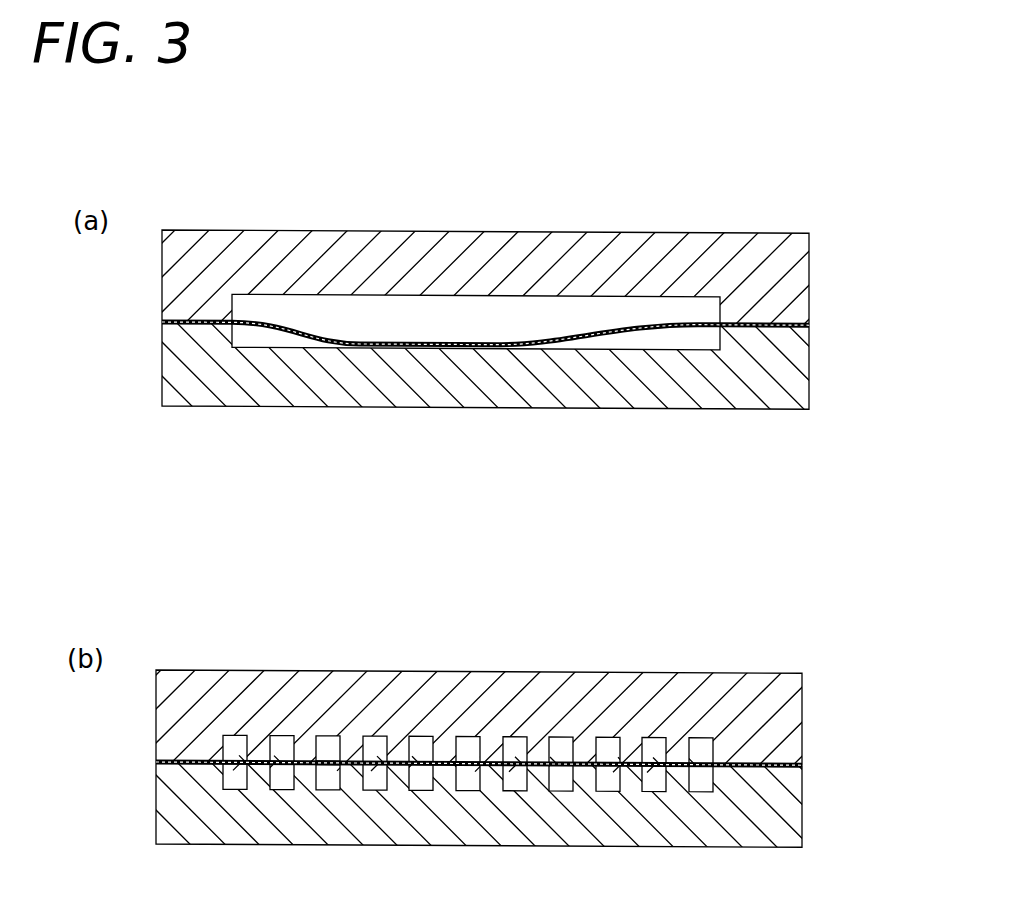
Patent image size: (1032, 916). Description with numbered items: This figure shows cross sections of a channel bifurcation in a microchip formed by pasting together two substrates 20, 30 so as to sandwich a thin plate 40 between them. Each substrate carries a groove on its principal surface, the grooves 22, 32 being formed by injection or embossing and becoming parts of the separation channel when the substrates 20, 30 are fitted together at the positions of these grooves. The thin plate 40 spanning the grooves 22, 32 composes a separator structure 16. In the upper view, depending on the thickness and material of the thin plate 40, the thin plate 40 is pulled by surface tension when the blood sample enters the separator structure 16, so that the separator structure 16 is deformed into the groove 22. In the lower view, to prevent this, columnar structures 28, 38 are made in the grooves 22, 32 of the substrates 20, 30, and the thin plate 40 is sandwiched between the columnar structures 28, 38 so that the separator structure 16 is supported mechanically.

The separator structure 16 is at (383, 328).
The substrate 20 is at (489, 615).
The groove 22 is at (290, 337).
The columnar structure 28 is at (397, 770).
The substrate 30 is at (488, 498).
The groove 32 is at (303, 305).
The columnar structure 38 is at (398, 747).
The thin plate 40 is at (534, 606).